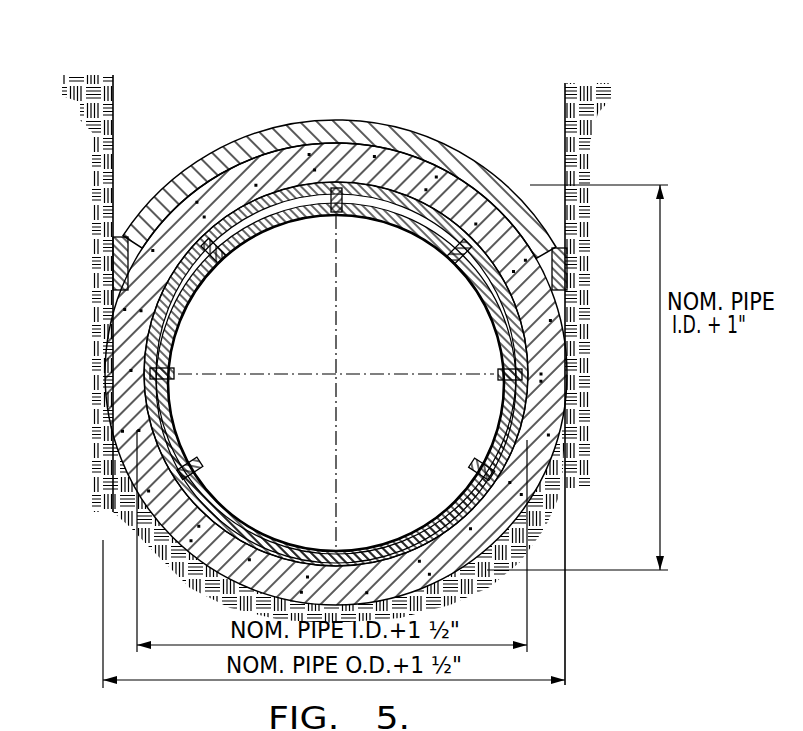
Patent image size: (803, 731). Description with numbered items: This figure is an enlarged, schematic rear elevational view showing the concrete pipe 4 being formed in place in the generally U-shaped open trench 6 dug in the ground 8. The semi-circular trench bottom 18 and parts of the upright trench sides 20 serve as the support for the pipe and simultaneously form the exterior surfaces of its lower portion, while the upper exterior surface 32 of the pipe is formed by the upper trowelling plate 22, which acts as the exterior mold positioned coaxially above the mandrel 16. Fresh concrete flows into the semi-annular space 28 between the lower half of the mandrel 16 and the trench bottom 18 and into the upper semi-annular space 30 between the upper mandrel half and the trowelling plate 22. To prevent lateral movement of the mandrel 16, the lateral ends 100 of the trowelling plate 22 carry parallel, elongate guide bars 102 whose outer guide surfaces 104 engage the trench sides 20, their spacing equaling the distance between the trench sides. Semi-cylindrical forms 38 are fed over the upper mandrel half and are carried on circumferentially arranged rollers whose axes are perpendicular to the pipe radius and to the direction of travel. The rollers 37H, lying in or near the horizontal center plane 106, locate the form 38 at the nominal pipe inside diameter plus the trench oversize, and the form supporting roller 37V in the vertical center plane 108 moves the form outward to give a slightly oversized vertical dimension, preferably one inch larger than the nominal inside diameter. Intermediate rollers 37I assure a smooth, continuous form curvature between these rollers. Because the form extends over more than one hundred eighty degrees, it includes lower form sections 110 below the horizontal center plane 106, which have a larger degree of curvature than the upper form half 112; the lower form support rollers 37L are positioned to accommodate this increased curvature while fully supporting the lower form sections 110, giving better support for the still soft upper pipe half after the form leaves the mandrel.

The trench 6 is at (323, 310).
The ground 8 is at (585, 84).
The trench sides 20 is at (114, 100).
The concrete pipe 4 is at (228, 146).
The upper exterior surface 32 is at (262, 128).
The upper semi-annular space 30 is at (333, 160).
The upper trowelling plate 22 is at (418, 141).
The upper form half 112 is at (452, 171).
The semi-cylindrical forms 38 is at (186, 178).
The mandrel 16 is at (240, 240).
The trench bottom 18 is at (400, 560).
The semi-annular space 28 is at (216, 582).
The lower form sections 110 is at (118, 437).
The lateral ends 100 is at (112, 247).
The guide bars 102 is at (113, 277).
The outer guide surfaces 104 is at (106, 292).
The form supporting roller 37V is at (341, 214).
The intermediate rollers 37I is at (224, 266).
The rollers 37H is at (172, 377).
The lower form support rollers 37L is at (198, 465).
The vertical center plane 108 is at (338, 300).
The horizontal center plane 106 is at (270, 374).